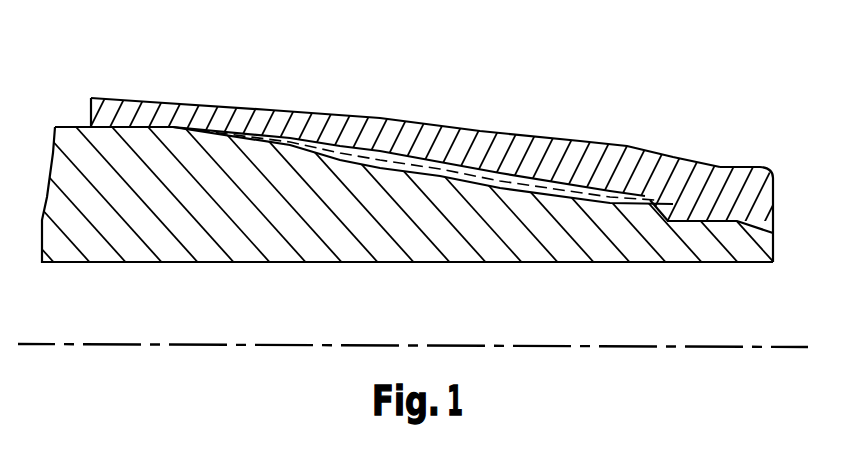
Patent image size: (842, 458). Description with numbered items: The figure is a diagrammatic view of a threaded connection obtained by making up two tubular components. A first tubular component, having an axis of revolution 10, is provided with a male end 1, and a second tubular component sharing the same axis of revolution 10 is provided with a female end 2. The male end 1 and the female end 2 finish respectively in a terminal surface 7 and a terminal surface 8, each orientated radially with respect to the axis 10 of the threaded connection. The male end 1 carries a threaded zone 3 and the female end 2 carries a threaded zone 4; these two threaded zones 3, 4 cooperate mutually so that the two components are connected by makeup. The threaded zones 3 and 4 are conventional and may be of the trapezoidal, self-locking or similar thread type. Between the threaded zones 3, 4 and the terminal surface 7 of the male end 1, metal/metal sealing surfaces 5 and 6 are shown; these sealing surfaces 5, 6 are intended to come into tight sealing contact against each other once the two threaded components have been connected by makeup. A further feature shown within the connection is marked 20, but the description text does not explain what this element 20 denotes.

The male end 1 is at (133, 210).
The female end 2 is at (100, 114).
The threaded zone 3 is at (258, 150).
The threaded zone 4 is at (320, 113).
The metal/metal sealing surface 5 is at (693, 222).
The metal/metal sealing surface 6 is at (723, 210).
The terminal surface 7 is at (777, 250).
The terminal surface 8 is at (90, 108).
The axis of revolution 10 is at (762, 347).
The slot centre line 20 is at (493, 176).